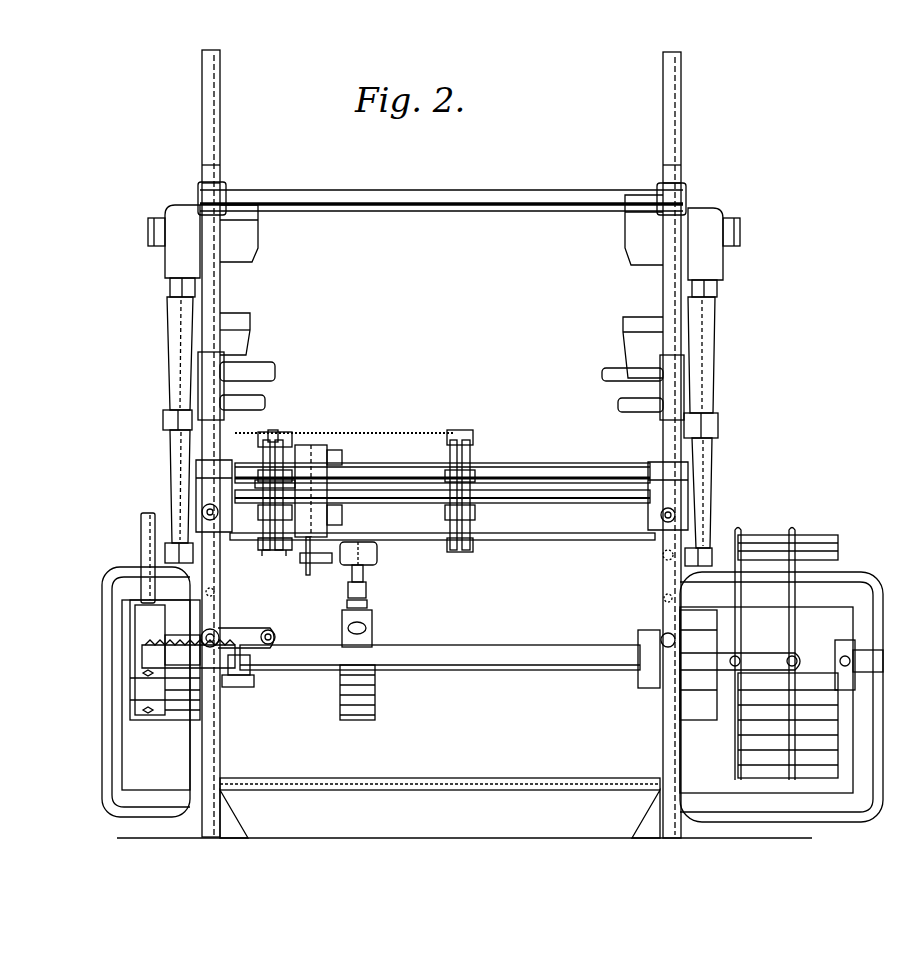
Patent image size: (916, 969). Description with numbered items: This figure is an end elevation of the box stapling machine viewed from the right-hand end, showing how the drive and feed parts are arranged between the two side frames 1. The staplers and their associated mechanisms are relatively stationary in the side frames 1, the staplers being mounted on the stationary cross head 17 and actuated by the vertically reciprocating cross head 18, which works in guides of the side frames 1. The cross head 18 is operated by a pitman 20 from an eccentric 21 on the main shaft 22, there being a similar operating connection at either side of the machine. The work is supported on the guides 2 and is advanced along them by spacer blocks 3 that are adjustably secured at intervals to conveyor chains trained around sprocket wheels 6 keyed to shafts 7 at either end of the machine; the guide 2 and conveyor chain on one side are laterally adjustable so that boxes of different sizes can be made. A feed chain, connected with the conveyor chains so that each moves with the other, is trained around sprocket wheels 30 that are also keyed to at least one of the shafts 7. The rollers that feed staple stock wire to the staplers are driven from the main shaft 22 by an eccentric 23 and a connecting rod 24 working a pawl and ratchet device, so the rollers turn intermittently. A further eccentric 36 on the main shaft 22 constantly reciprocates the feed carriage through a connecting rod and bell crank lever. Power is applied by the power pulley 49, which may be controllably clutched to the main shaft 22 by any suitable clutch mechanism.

The side frames 1 is at (662, 740).
The guides 2 is at (262, 450).
The spacer blocks 3 is at (276, 438).
The sprocket wheels 6 is at (268, 535).
The shafts 7 is at (402, 493).
The stationary cross head 17 is at (630, 342).
The vertically reciprocating cross head 18 is at (640, 232).
The pitman 20 is at (178, 383).
The eccentric 21 is at (712, 550).
The main shaft 22 is at (557, 672).
The eccentric 23 is at (143, 640).
The connecting rod 24 is at (148, 537).
The sprocket wheels 30 is at (305, 522).
The eccentric 36 is at (376, 632).
The power pulley 49 is at (752, 736).